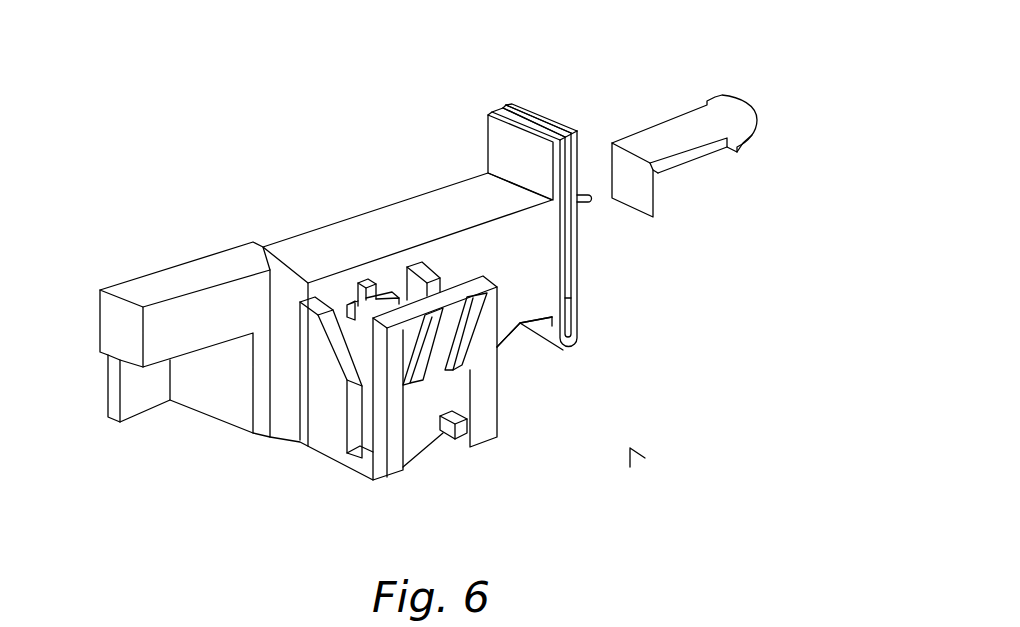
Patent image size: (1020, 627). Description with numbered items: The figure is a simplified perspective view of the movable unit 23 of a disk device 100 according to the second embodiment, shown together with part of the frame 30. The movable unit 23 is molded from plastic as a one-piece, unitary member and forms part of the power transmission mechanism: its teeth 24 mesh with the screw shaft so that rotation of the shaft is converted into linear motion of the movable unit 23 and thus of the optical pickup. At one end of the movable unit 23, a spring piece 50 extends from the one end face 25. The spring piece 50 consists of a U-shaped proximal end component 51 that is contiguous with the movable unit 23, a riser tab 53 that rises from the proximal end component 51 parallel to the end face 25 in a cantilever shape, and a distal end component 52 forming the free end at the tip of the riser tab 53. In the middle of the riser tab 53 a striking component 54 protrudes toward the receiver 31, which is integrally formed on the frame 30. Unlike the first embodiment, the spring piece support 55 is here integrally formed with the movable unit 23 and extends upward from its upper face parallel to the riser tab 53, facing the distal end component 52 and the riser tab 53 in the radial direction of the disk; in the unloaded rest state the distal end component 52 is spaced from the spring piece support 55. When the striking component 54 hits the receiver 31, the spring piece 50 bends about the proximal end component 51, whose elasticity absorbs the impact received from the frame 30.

The movable unit 23 is at (360, 217).
The teeth 24 is at (423, 350).
The one end face 25 is at (572, 298).
The frame 30 is at (752, 105).
The receiver 31 is at (642, 203).
The spring piece 50 is at (542, 111).
The proximal end component 51 is at (558, 352).
The distal end component 52 is at (553, 123).
The riser tab 53 is at (577, 270).
The striking component 54 is at (588, 197).
The spring piece support 55 is at (513, 145).
The disk device 100 is at (630, 448).